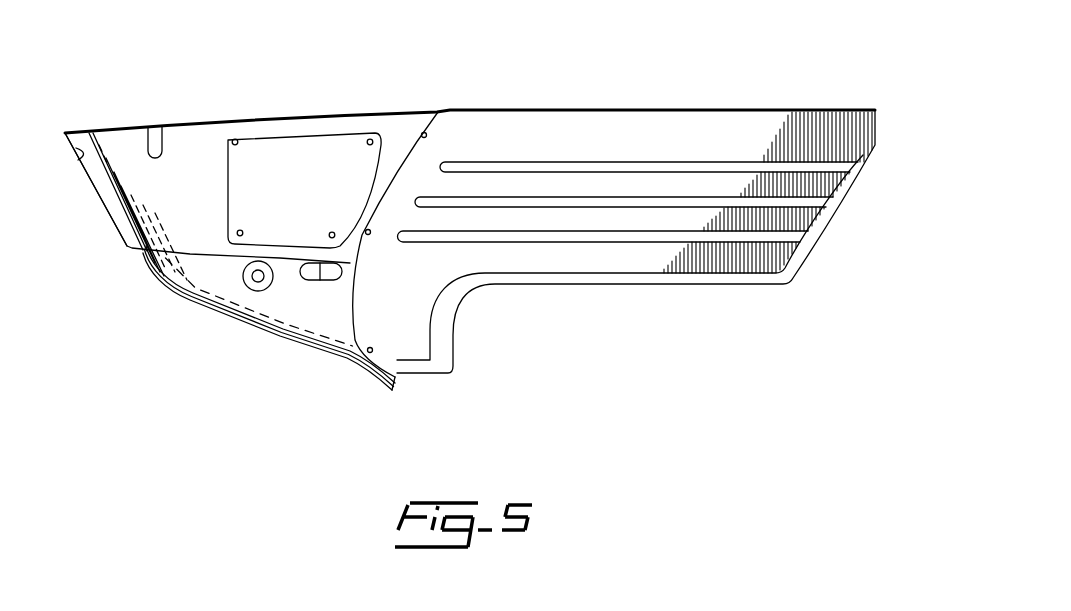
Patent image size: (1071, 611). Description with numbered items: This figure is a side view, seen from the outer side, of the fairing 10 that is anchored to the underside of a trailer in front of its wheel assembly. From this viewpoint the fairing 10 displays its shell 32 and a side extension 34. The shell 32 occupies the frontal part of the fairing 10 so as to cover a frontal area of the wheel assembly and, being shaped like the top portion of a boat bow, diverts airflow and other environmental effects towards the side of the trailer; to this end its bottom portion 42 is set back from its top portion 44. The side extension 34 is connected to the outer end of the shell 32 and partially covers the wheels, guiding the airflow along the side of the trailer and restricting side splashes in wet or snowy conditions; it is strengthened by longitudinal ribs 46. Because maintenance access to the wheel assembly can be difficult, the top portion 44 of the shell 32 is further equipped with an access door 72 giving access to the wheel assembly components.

The fairing 10 is at (470, 213).
The shell 32 is at (178, 117).
The side extensions 34 is at (548, 285).
The bottom portion 42 is at (238, 322).
The top portion 44 is at (114, 220).
The longitudinal ribs 46 is at (684, 136).
The access door 72 is at (338, 150).